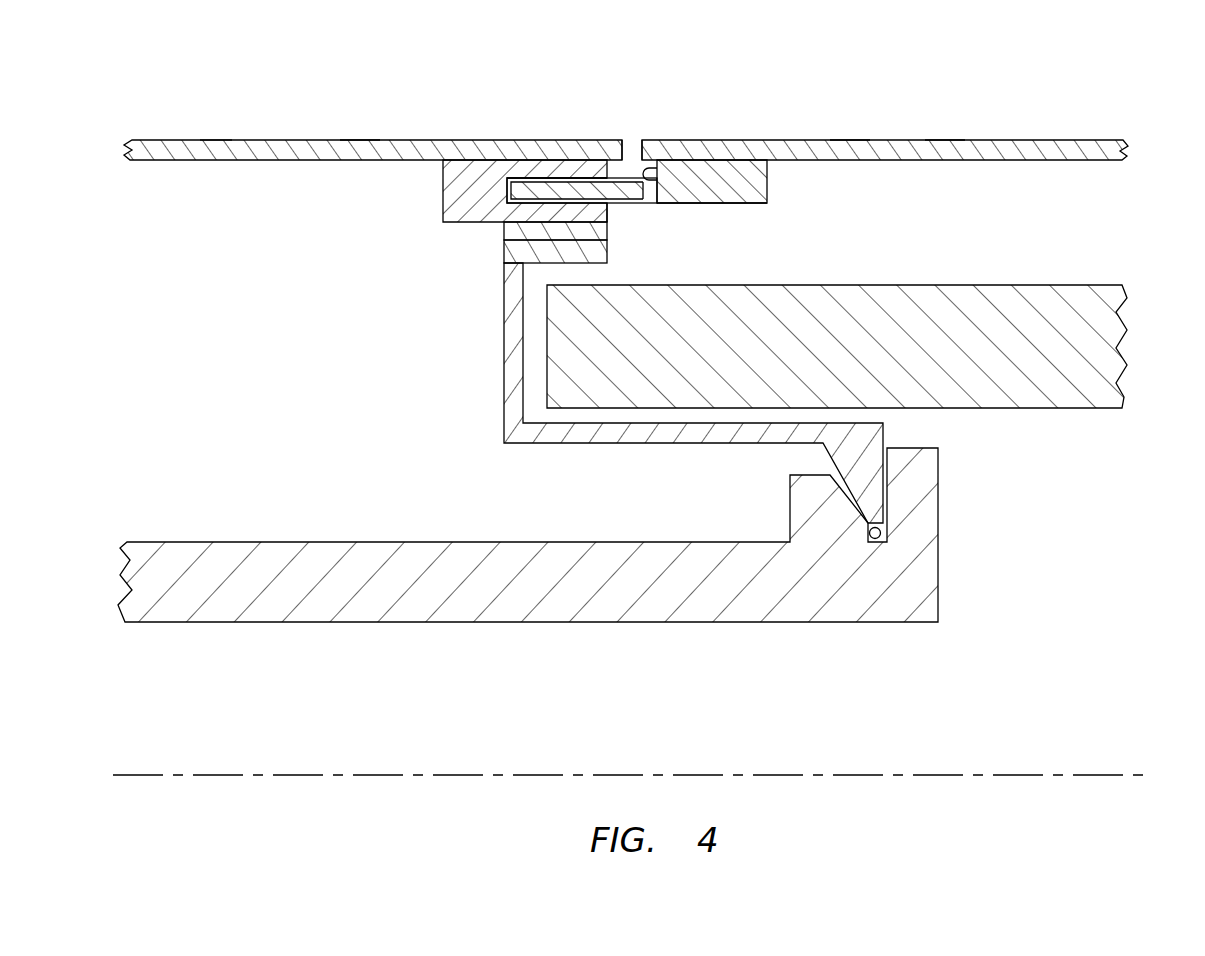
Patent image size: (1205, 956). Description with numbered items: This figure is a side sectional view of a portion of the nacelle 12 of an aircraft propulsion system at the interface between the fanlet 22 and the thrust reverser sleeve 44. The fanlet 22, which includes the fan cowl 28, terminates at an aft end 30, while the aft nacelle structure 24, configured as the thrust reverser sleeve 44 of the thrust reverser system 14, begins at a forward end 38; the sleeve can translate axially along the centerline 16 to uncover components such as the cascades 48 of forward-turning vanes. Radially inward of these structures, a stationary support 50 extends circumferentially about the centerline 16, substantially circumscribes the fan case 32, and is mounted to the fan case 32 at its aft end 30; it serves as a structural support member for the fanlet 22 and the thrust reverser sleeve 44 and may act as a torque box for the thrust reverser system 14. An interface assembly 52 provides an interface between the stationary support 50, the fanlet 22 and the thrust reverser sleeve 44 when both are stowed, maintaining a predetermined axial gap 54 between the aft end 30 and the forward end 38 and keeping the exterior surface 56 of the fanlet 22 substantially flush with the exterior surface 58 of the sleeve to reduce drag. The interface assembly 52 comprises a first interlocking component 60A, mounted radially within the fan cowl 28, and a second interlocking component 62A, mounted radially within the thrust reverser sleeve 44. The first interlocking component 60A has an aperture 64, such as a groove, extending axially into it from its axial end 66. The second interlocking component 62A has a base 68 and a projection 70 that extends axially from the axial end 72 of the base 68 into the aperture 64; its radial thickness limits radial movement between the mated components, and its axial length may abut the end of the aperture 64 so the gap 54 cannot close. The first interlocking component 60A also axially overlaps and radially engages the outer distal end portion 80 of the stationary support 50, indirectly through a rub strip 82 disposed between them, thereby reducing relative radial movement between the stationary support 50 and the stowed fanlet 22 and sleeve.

The nacelle 12 is at (1015, 118).
The thrust reverser system 14 is at (1118, 243).
The centerline 16 is at (1095, 775).
The fanlet 22 is at (162, 140).
The aft nacelle structure 24 is at (1108, 147).
The fan cowl 28 is at (215, 140).
The aft end 30 is at (624, 156).
The fan case 32 is at (315, 542).
The forward end 38 is at (641, 156).
The thrust reverser sleeve 44 is at (946, 140).
The cascades 48 is at (1062, 397).
The stationary support 50 is at (500, 400).
The interface assembly 52 is at (445, 240).
The axial gap 54 is at (646, 156).
The exterior surface 56 is at (359, 140).
The exterior surface 58 is at (850, 140).
The first interlocking component 60A is at (443, 183).
The second interlocking component 62A is at (756, 157).
The aperture 64 is at (528, 178).
The axial end 66 is at (608, 213).
The base 68 is at (725, 203).
The projection 70 is at (630, 203).
The axial end 72 is at (655, 190).
The outer distal end portion 80 is at (548, 255).
The rub strip 82 is at (504, 230).